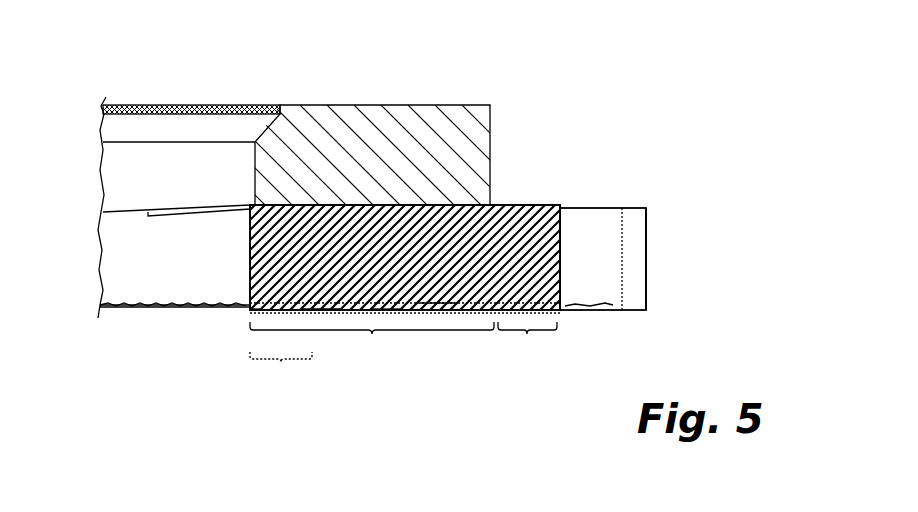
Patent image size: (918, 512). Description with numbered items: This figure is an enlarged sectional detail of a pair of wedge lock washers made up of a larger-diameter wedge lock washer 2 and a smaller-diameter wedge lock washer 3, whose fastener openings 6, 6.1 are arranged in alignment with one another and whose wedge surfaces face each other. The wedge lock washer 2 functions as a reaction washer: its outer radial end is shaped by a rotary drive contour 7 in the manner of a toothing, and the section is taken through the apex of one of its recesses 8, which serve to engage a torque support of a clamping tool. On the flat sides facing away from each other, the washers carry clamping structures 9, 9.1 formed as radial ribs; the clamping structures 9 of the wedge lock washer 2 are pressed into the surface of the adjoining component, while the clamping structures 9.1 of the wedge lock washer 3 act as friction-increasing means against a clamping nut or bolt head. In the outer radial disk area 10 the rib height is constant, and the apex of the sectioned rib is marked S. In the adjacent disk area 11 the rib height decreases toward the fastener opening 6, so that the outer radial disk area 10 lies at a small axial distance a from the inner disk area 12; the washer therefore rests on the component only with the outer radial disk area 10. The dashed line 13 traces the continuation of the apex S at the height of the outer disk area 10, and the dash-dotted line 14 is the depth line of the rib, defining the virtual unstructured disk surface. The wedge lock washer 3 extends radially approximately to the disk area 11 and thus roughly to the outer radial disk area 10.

The wedge lock washer 2 is at (546, 198).
The wedge lock washer 3 is at (488, 102).
The fastener opening 6 is at (175, 270).
The fastener opening 6.1 is at (203, 181).
The rotary drive contour 7 is at (648, 242).
The recess 8 is at (596, 273).
The clamping structure 9 is at (170, 308).
The clamping structure 9.1 is at (150, 102).
The outer radial disk area 10 is at (527, 345).
The disk area 11 is at (372, 345).
The inner disk area 12 is at (281, 376).
The dashed line 13 is at (322, 316).
The dash-dotted line 14 is at (438, 305).
The axial distance a is at (246, 311).
The apex S is at (386, 312).